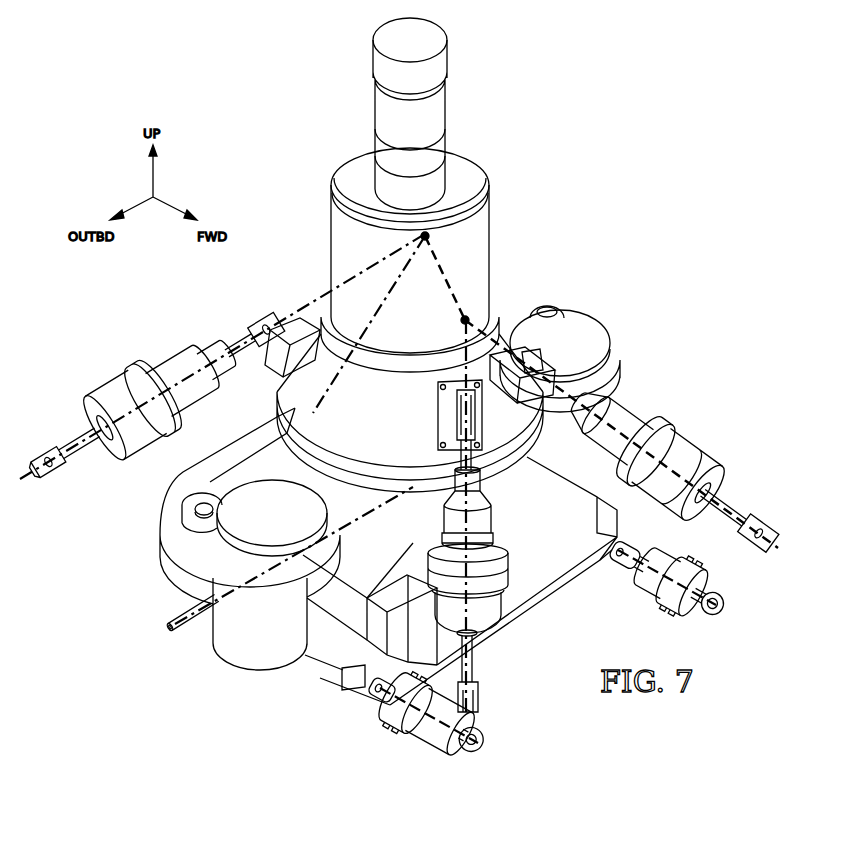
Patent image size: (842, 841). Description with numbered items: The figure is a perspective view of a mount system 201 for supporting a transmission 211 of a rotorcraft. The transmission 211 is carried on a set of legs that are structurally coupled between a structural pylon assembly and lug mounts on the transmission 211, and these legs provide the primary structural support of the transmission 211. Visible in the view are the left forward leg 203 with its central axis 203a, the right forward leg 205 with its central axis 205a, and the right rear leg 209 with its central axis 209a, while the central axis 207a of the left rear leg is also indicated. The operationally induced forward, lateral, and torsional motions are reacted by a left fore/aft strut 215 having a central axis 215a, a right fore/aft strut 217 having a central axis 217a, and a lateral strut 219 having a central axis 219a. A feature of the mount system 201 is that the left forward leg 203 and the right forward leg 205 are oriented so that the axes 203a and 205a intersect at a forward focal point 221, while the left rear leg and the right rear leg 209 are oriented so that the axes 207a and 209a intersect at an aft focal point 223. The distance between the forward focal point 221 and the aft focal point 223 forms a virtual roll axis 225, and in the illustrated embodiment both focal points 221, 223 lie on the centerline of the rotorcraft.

The mount system 201 is at (622, 250).
The left forward leg 203 is at (637, 408).
The central axis of left forward leg 203a is at (735, 502).
The right forward leg 205 is at (508, 567).
The central axis of right forward leg 205a is at (471, 658).
The central axis of left rear leg 207a is at (340, 385).
The right rear leg 209 is at (170, 364).
The central axis of right rear leg 209a is at (310, 306).
The transmission 211 is at (340, 166).
The left fore/aft strut 215 is at (684, 558).
The central axis of left fore/aft strut 215a is at (660, 556).
The right fore/aft strut 217 is at (408, 755).
The central axis of right fore/aft strut 217a is at (450, 752).
The lateral strut 219 is at (195, 628).
The central axis of lateral strut 219a is at (176, 606).
The forward focal point 221 is at (458, 322).
The aft focal point 223 is at (443, 234).
The virtual roll axis 225 is at (452, 275).